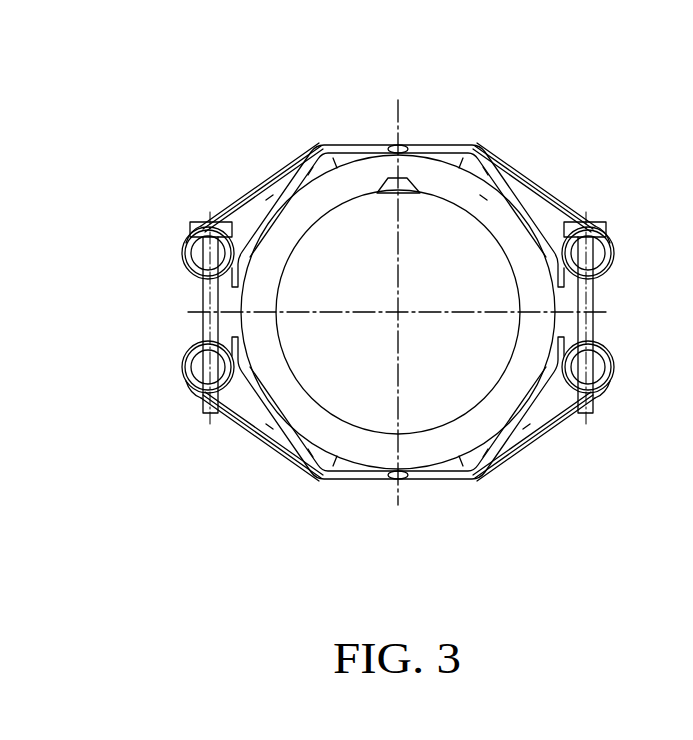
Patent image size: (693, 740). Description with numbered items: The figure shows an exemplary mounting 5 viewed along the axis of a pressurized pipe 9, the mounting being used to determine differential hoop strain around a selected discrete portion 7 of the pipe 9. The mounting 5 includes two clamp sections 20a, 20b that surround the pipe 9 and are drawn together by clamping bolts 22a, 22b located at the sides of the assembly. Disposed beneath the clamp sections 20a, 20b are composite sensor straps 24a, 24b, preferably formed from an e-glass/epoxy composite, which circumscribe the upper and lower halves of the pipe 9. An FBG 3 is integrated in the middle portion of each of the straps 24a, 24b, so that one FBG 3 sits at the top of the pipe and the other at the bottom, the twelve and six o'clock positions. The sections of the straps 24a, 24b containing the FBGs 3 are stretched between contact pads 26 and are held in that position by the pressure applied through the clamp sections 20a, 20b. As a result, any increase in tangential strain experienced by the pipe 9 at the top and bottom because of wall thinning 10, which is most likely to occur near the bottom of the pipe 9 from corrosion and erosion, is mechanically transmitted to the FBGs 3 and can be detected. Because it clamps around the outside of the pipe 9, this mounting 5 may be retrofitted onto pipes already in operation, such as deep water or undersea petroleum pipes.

The FBG 3 is at (404, 147).
The mounting 5 is at (305, 116).
The discrete portion 7 is at (380, 433).
The pressurized pipe 9 is at (500, 251).
The wall thinning 10 is at (388, 191).
The clamp section 20a is at (553, 197).
The clamp section 20b is at (555, 427).
The clamping bolt 22a is at (205, 296).
The clamping bolt 22b is at (590, 295).
The composite sensor strap 24a is at (265, 191).
The composite sensor strap 24b is at (310, 478).
The contact pad 26 is at (486, 150).